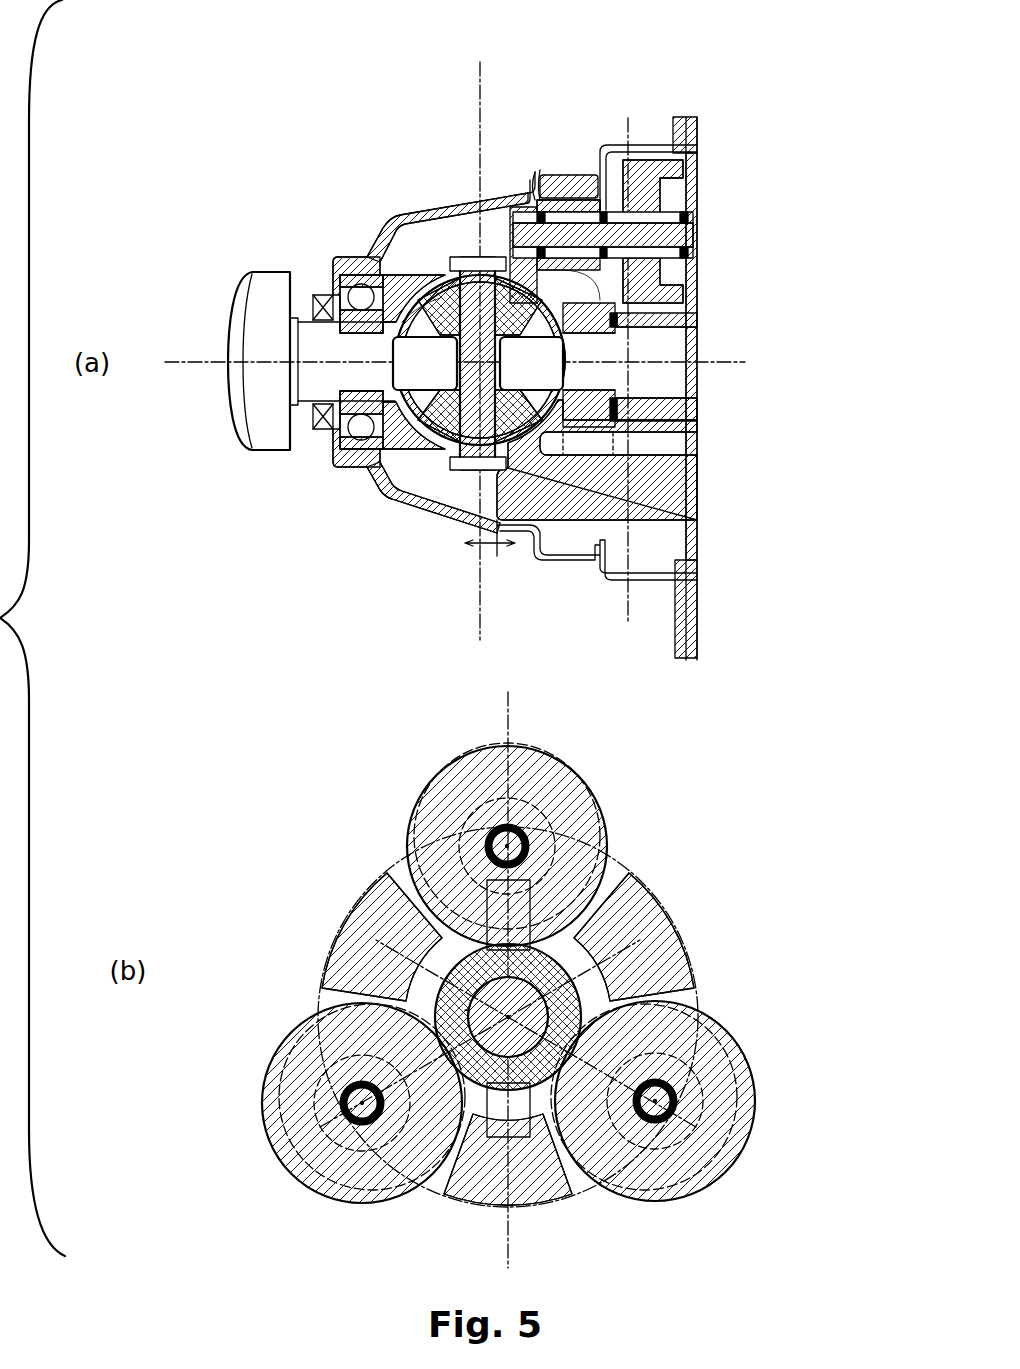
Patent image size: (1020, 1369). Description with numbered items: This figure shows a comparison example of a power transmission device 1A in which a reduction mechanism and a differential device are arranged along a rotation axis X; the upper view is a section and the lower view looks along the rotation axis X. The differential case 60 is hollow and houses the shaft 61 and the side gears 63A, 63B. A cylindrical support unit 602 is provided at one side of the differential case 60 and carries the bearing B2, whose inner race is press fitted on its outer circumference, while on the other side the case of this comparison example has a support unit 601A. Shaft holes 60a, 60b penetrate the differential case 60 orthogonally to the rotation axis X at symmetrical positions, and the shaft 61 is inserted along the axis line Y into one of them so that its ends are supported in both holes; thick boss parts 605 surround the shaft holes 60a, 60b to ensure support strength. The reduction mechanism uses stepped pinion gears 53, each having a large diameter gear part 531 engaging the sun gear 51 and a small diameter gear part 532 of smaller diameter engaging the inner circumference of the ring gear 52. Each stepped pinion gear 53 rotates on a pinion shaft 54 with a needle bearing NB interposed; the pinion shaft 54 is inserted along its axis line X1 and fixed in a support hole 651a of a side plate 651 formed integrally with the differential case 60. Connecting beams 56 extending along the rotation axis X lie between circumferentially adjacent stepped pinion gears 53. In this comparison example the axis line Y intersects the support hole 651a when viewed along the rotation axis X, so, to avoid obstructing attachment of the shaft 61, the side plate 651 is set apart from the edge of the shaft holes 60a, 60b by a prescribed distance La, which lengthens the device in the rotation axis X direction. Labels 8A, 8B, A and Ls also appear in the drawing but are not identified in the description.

The power transmission device 1A is at (268, 168).
The knob / handle 8A is at (268, 274).
The annular member 8B is at (586, 982).
The bearing B2 is at (362, 290).
The differential case 60 is at (402, 296).
The shaft hole 60a is at (432, 233).
The shaft hole 60b is at (388, 458).
The cylindrical support unit 602 is at (378, 336).
The thick boss part 605 is at (476, 232).
The shaft 61 is at (472, 470).
The side gear 63A is at (425, 363).
The side gear 63B is at (531, 363).
The support unit 601A is at (588, 396).
The sun gear 51 is at (662, 330).
The ring gear 52 is at (572, 174).
The stepped pinion gear 53 is at (553, 82).
The large diameter gear part 531 is at (638, 195).
The small diameter gear part 532 is at (590, 200).
The pinion shaft 54 is at (690, 233).
The connecting beam 56 is at (648, 505).
The side plate 651 is at (522, 208).
The support hole 651a is at (537, 178).
The needle bearing NB is at (585, 289).
The rotation axis X is at (442, 681).
The axis line X1 is at (396, 1110).
The axis line Y is at (493, 648).
The section line A is at (625, 380).
The prescribed distance La is at (491, 558).
The slot length Ls is at (588, 464).